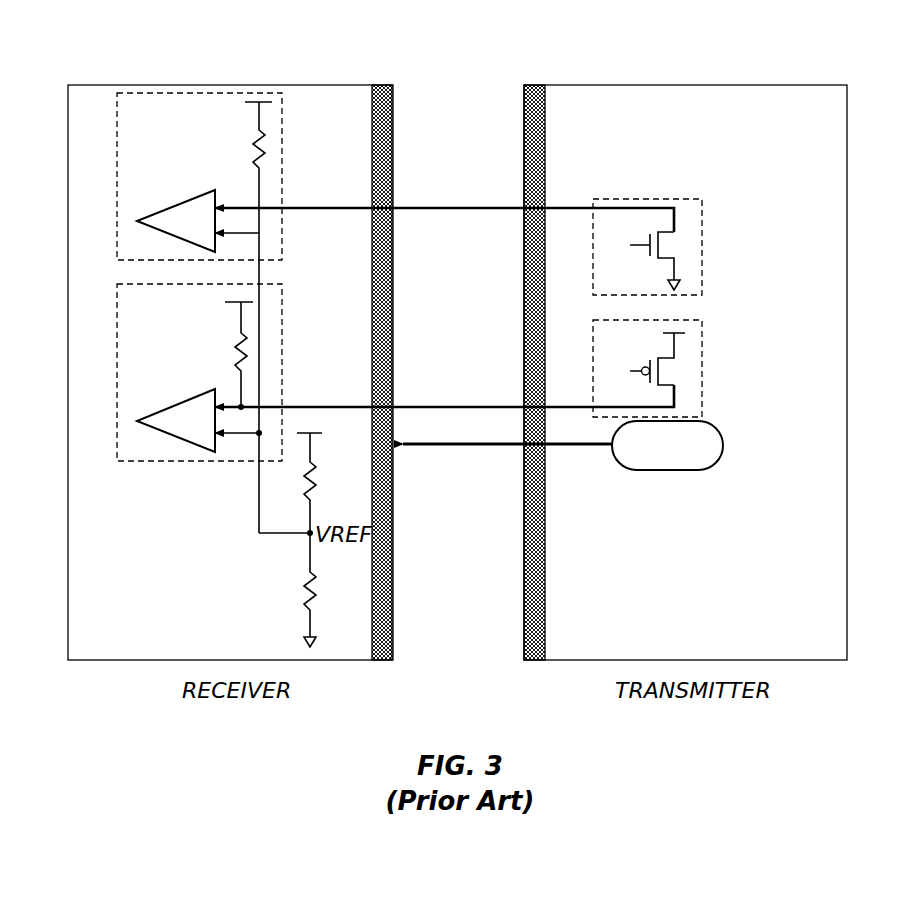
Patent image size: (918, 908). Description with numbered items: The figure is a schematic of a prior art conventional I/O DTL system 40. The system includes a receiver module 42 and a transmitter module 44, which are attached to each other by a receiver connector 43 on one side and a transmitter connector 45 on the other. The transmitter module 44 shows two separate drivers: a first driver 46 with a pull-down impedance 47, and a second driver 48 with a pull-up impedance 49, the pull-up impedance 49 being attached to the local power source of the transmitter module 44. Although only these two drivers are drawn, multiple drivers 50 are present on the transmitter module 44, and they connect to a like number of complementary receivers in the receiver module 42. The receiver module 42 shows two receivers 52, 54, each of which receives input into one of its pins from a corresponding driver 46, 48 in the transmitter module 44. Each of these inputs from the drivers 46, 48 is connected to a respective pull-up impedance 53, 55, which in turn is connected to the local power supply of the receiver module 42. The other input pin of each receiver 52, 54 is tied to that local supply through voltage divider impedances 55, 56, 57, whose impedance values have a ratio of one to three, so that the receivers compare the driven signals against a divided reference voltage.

The prior art conventional I/O DTL system 40 is at (705, 40).
The receiver module 42 is at (80, 590).
The receiver connector 43 is at (388, 130).
The transmitter module 44 is at (835, 590).
The transmitter connector 45 is at (526, 130).
The first driver 46 is at (670, 245).
The pull-down impedance 47 is at (662, 250).
The second driver 48 is at (670, 366).
The pull-up impedance 49 is at (662, 371).
The multiple drivers 50 is at (725, 443).
The receiver 52 is at (180, 313).
The pull-up impedance 53 is at (252, 150).
The receiver 54 is at (180, 372).
The pull-up impedance 55 is at (237, 350).
The voltage divider impedance 56 is at (298, 478).
The voltage divider impedance 57 is at (300, 595).